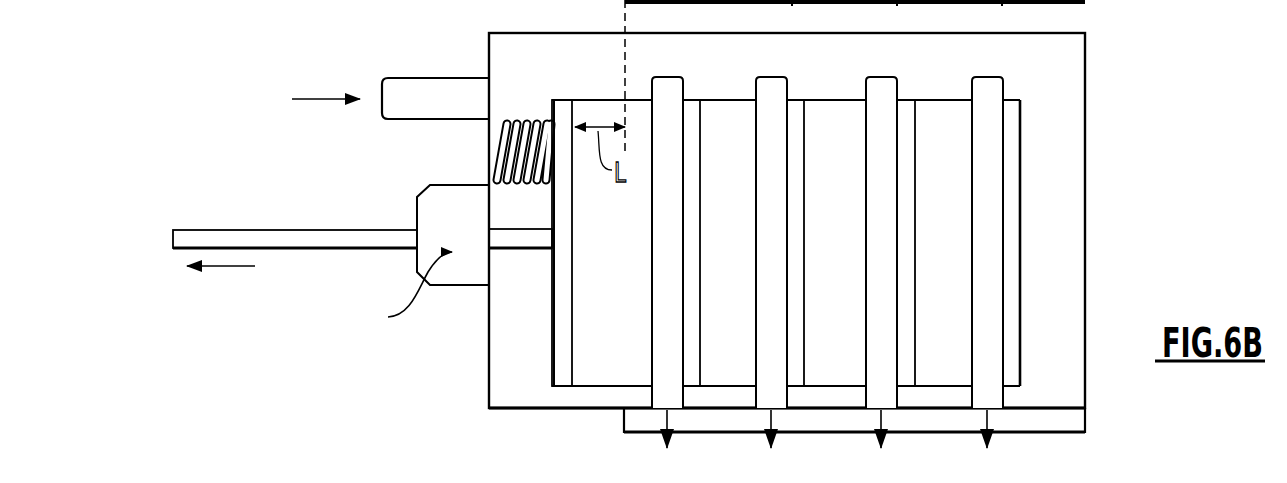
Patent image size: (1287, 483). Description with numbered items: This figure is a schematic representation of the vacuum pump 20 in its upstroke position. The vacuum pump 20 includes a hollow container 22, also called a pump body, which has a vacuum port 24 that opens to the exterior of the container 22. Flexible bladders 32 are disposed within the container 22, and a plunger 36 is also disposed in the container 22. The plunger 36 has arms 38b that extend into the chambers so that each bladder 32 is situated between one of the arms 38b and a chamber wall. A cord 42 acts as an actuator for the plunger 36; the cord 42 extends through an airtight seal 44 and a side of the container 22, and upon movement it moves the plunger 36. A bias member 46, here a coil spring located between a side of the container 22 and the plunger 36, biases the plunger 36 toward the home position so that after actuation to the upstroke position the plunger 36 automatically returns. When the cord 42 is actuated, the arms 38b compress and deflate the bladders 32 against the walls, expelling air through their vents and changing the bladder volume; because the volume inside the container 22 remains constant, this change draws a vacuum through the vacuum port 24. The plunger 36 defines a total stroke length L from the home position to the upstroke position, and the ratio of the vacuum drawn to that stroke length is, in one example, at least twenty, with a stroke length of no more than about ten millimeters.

The vacuum pump 20 is at (737, 204).
The hollow container 22 is at (559, 33).
The vacuum port 24 is at (418, 78).
The flexible bladders 32 is at (663, 77).
The plunger 36 is at (565, 100).
The arms 38b is at (704, 112).
The cord 42 is at (230, 230).
The airtight seal 44 is at (446, 185).
The bias member 46 is at (511, 117).